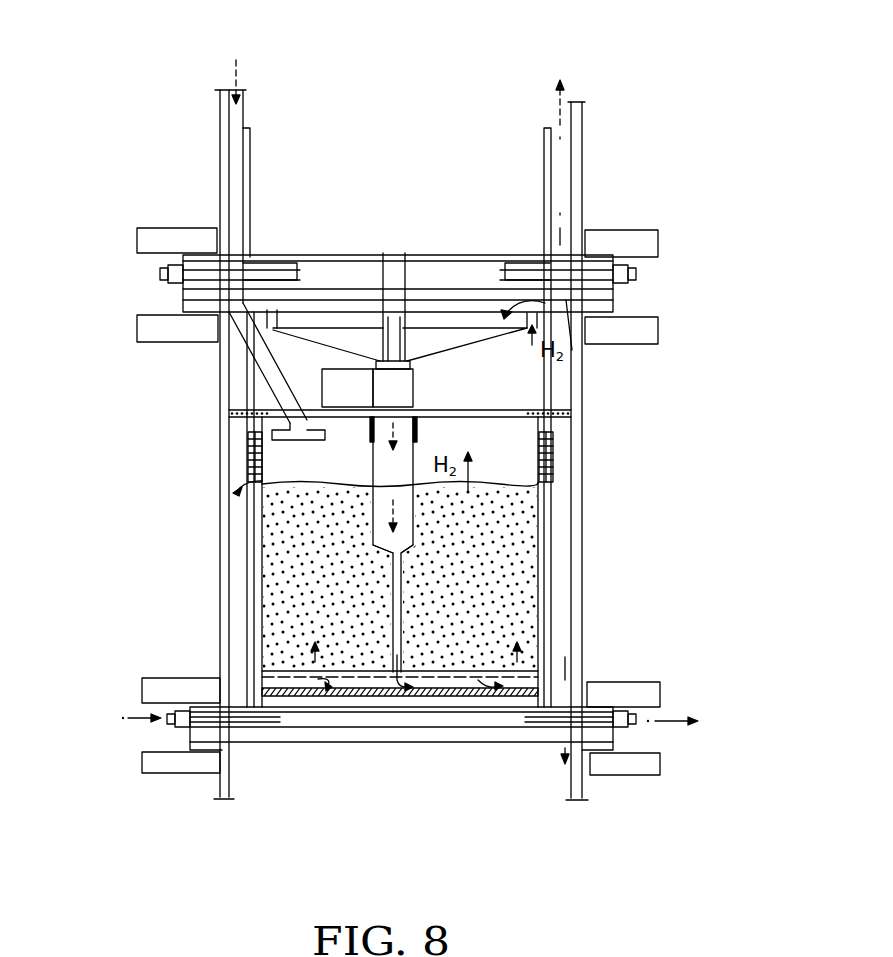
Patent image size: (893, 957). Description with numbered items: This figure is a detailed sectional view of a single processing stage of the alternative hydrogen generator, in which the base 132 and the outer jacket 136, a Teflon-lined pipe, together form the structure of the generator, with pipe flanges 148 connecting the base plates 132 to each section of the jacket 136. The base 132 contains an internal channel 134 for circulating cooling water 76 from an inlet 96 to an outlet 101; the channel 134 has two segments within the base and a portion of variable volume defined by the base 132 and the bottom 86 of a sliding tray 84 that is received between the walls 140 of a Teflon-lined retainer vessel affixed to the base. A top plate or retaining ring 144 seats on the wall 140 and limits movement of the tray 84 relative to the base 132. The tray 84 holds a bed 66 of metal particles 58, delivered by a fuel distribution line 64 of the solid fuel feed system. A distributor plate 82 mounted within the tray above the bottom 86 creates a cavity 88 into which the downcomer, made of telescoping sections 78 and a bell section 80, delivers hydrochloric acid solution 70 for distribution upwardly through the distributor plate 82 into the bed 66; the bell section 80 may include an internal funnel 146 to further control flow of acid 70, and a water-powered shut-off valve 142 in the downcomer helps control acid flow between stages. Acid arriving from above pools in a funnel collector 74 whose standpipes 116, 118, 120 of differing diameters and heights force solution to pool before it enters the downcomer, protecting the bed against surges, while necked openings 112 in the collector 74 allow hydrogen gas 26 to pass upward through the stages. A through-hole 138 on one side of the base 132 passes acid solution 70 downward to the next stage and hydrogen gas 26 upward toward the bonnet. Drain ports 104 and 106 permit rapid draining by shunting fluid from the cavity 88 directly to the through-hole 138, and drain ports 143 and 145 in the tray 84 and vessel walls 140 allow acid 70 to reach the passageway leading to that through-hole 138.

The metal particles 58 is at (238, 78).
The hydrogen gas 26 is at (557, 108).
The acid solution 70 is at (562, 228).
The walls of the retainer vessel 140 is at (251, 150).
The outer jacket 136 is at (582, 598).
The internal channel 134 is at (272, 267).
The base 132 is at (470, 300).
The pipe flanges 148 is at (137, 330).
The inlet 96 is at (165, 272).
The outlet 101 is at (633, 279).
The standpipe 120 is at (383, 320).
The standpipe 118 is at (392, 317).
The standpipe 116 is at (403, 317).
The necked openings 112 is at (278, 320).
The fuel distribution line 64 is at (253, 358).
The funnel collector 74 is at (462, 345).
The through-hole 138 is at (577, 340).
The top plate or retaining ring 144 is at (230, 408).
The shut-off valve 142 is at (362, 401).
The telescoping section 78 is at (415, 393).
The bed 66 is at (293, 478).
The bell section 80 is at (373, 450).
The drain port 143 is at (538, 445).
The drain port 145 is at (553, 457).
The internal funnel 146 is at (376, 547).
The drain port 106 is at (262, 593).
The drain port 104 is at (265, 661).
The sliding tray 84 is at (536, 634).
The cooling water 76 is at (135, 712).
The distributor plate 82 is at (372, 700).
The bottom of the sliding tray 86 is at (445, 700).
The cavity 88 is at (486, 698).